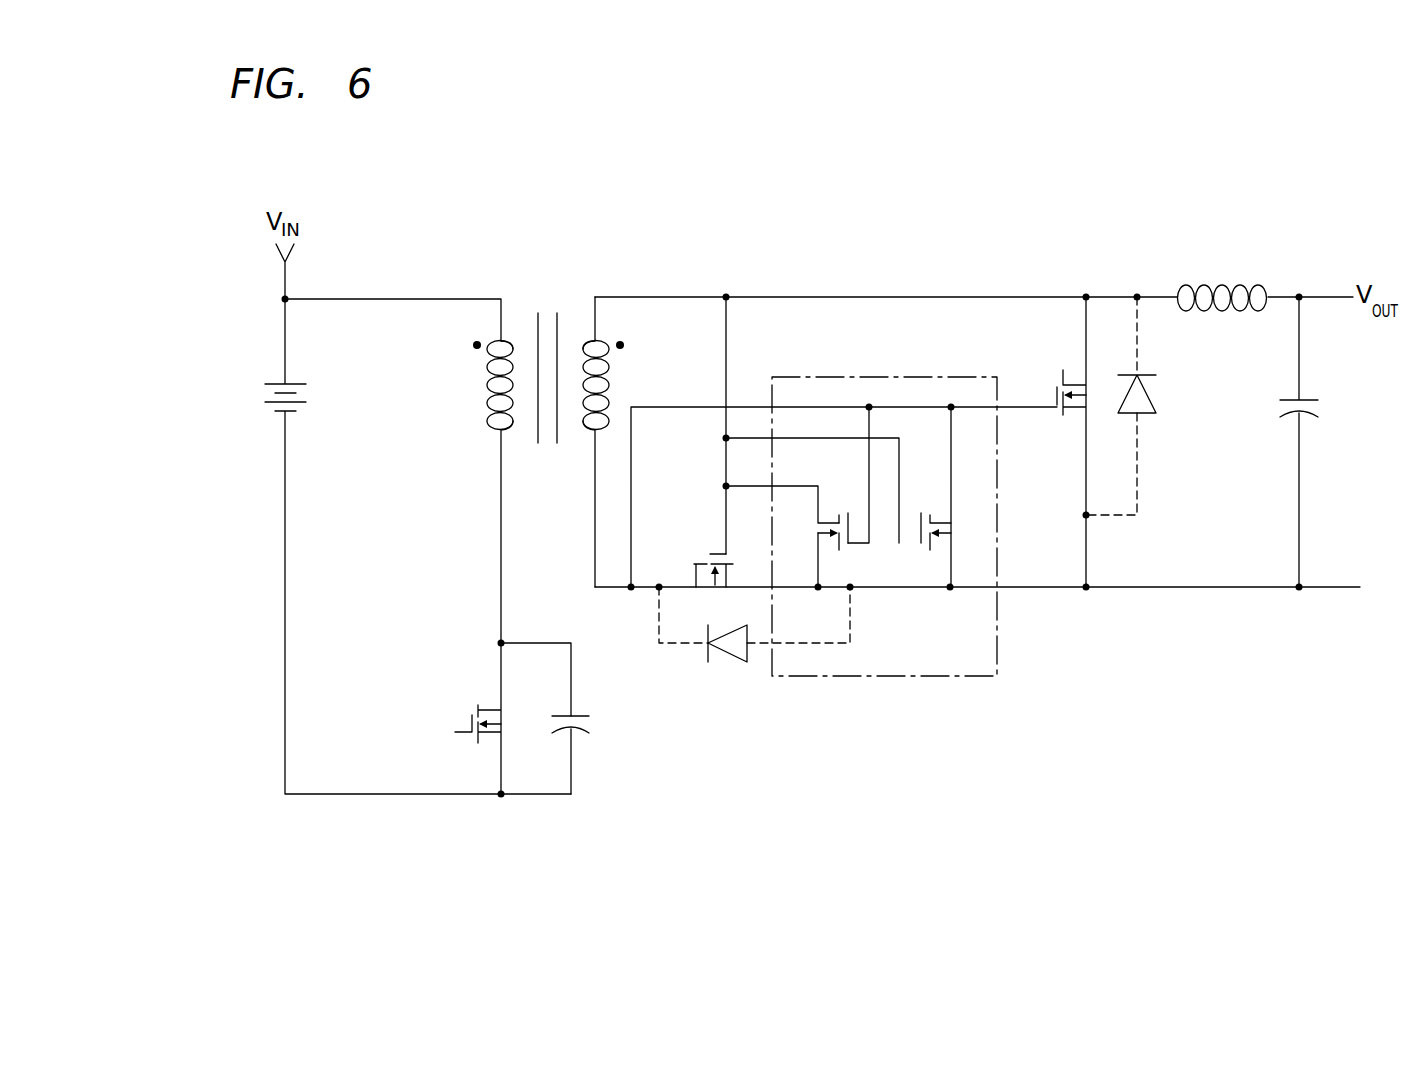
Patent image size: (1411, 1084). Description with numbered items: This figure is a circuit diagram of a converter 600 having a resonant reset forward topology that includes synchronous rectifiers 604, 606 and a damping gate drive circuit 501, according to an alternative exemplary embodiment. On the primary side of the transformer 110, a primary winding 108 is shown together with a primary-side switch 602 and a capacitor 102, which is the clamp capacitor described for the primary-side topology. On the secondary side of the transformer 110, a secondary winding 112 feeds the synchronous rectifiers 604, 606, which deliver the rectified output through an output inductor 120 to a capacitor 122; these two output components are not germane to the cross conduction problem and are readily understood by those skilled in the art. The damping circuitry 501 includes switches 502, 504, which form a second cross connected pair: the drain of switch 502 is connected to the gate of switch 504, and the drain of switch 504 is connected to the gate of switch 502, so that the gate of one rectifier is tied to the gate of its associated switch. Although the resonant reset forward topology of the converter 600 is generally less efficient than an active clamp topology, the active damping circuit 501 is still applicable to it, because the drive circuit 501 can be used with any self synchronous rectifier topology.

The primary winding 108 is at (487, 378).
The transformer 110 is at (546, 306).
The secondary winding 112 is at (611, 378).
The converter 600 is at (773, 254).
The switch 502 is at (845, 516).
The switch 504 is at (926, 516).
The synchronous rectifier 604 is at (701, 562).
The synchronous rectifier 606 is at (1057, 379).
The primary switch transistor 602 is at (473, 710).
The damping circuitry 501 is at (998, 637).
The output inductor 120 is at (1220, 284).
The capacitor 122 is at (1280, 405).
The clamp capacitor 102 is at (591, 722).